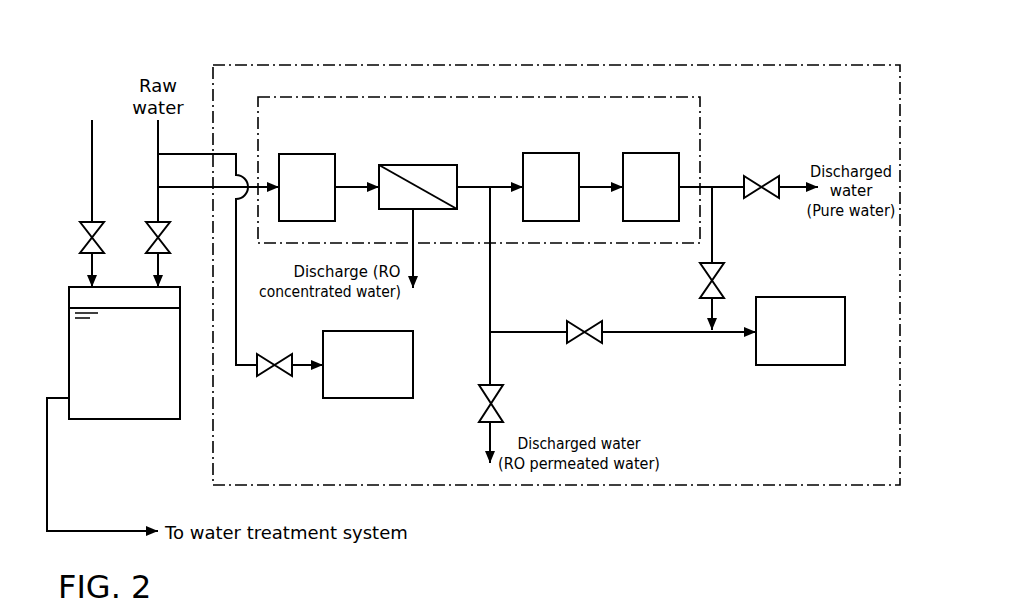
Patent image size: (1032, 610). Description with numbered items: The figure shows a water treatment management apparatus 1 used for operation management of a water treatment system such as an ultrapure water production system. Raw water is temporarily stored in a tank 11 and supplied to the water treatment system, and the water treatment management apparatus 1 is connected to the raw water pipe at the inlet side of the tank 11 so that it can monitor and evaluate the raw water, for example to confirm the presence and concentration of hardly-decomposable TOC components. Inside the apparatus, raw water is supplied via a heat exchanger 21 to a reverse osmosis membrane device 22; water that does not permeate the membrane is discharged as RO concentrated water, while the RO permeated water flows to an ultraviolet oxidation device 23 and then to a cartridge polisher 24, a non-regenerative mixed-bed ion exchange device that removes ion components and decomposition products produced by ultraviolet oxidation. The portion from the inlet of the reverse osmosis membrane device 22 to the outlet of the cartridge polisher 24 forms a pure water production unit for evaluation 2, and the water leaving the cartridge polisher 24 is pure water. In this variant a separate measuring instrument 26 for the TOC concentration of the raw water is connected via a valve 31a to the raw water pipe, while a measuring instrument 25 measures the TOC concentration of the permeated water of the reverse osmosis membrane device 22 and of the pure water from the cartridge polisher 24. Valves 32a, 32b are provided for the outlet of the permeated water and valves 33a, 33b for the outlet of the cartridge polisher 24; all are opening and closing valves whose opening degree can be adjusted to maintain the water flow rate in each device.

The water treatment management apparatus 1 is at (830, 66).
The pure water production unit for evaluation 2 is at (700, 129).
The tank 11 is at (122, 419).
The heat exchanger (HE) 21 is at (319, 160).
The reverse osmosis membrane device (RO) 22 is at (431, 170).
The ultraviolet oxidation device (UV) 23 is at (566, 158).
The cartridge polisher (CP) 24 is at (667, 158).
The measuring instrument 25 is at (826, 302).
The measuring instrument 26 is at (388, 395).
The valve 31a is at (274, 372).
The valve 32a is at (586, 322).
The valve 32b is at (494, 404).
The valve 33a is at (755, 175).
The valve 33b is at (706, 285).